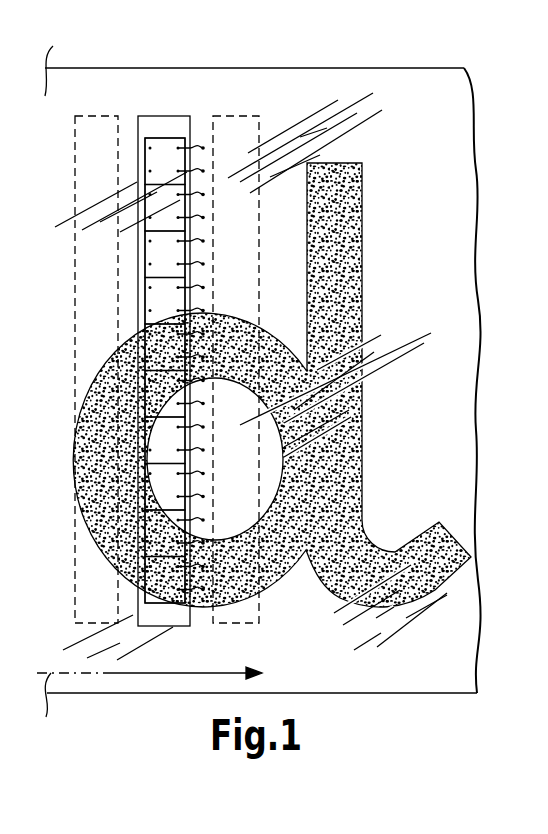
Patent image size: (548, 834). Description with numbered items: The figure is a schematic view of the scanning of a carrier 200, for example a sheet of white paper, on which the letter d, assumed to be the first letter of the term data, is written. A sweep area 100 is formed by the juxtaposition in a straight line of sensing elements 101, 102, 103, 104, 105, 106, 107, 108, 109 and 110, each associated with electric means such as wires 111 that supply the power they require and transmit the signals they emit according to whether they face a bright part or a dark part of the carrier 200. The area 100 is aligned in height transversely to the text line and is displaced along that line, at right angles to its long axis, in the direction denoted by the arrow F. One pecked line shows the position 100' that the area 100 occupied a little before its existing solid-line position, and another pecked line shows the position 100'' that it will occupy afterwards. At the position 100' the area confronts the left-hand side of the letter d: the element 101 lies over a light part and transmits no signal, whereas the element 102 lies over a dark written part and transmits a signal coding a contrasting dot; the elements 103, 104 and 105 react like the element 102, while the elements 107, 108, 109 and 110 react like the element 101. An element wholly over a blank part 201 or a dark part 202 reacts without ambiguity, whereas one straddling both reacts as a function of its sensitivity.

The sweep area 100 is at (108, 371).
The position previously occupied by the area 100' is at (69, 388).
The position to be occupied by the area 100'' is at (269, 386).
The sensing element 101 is at (146, 575).
The sensing element 102 is at (146, 530).
The sensing element 103 is at (146, 490).
The sensing element 104 is at (146, 450).
The sensing element 105 is at (146, 402).
The sensing element 106 is at (146, 355).
The sensing element 107 is at (146, 305).
The sensing element 108 is at (146, 258).
The sensing element 109 is at (146, 215).
The sensing element 110 is at (160, 148).
The wires 111 is at (197, 146).
The carrier 200 is at (425, 95).
The blank part 201 is at (287, 95).
The dark part 202 is at (362, 165).
The arrow F is at (185, 673).